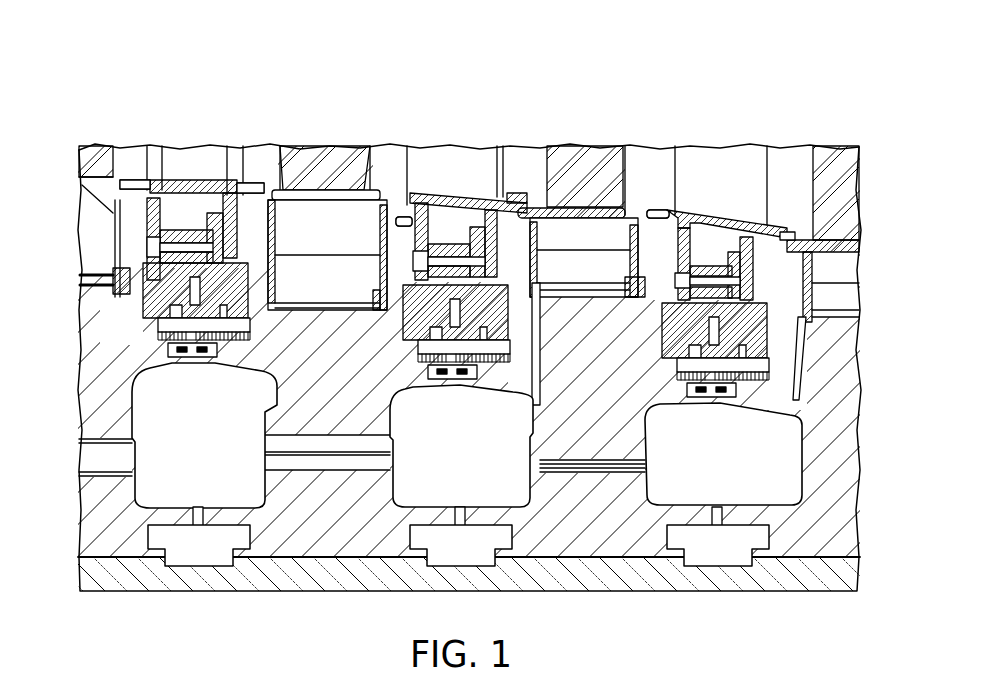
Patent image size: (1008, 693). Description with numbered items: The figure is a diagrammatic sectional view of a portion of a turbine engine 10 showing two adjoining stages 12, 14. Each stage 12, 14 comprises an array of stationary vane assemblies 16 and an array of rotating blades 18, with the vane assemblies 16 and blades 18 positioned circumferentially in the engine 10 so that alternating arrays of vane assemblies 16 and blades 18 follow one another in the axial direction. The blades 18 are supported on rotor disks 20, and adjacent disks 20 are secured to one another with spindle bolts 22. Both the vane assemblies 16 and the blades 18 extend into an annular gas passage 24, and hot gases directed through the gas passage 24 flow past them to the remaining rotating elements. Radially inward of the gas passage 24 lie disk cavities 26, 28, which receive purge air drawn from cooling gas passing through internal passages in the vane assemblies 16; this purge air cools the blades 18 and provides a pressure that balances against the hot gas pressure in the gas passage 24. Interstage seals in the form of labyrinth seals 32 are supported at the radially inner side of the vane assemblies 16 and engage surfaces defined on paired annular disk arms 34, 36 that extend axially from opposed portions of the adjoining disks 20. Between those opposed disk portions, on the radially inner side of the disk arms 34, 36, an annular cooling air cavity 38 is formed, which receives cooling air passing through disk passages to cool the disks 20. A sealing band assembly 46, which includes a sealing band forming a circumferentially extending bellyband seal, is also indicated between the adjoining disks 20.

The turbine engine 10 is at (98, 118).
The stage 12 is at (258, 142).
The stage 14 is at (535, 150).
The vane assembly 16 is at (186, 174).
The blade 18 is at (321, 150).
The rotor disk 20 is at (313, 355).
The spindle bolt 22 is at (90, 582).
The annular gas passage 24 is at (278, 150).
The disk cavity 26 is at (138, 215).
The disk cavity 28 is at (226, 150).
The labyrinth seal 32 is at (140, 333).
The annular disk arm 34 is at (128, 365).
The annular disk arm 36 is at (245, 357).
The annular cooling air cavity 38 is at (203, 497).
The sealing band assembly 46 is at (192, 372).